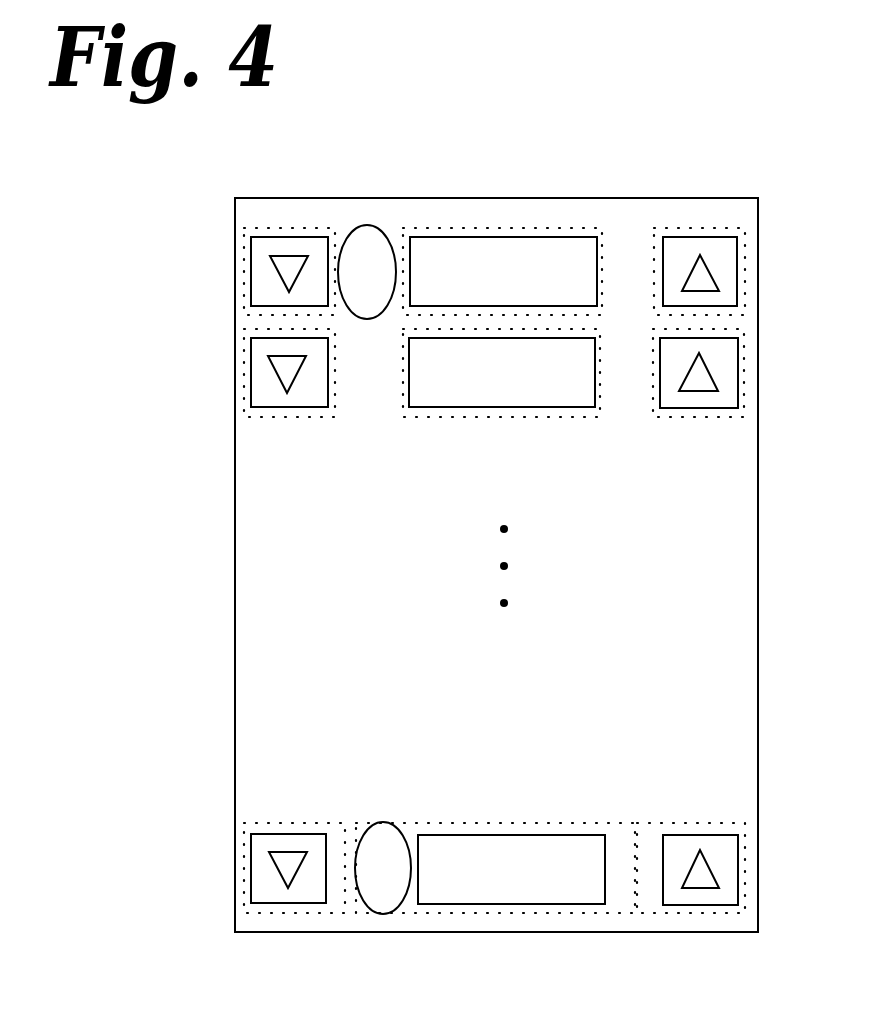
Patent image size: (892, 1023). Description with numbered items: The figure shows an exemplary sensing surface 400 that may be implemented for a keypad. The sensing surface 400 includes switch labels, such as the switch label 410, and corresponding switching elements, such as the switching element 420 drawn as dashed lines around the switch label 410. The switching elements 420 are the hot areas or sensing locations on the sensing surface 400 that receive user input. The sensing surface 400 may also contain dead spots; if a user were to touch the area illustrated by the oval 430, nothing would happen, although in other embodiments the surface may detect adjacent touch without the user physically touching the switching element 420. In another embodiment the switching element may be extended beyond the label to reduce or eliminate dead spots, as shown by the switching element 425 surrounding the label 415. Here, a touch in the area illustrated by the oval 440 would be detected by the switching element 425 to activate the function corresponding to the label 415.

The sensing surface 400 is at (422, 563).
The switch label 410 is at (510, 237).
The label 415 is at (513, 835).
The switching element 420 is at (502, 222).
The switching element 425 is at (495, 877).
The oval 430 is at (373, 227).
The oval 440 is at (388, 822).